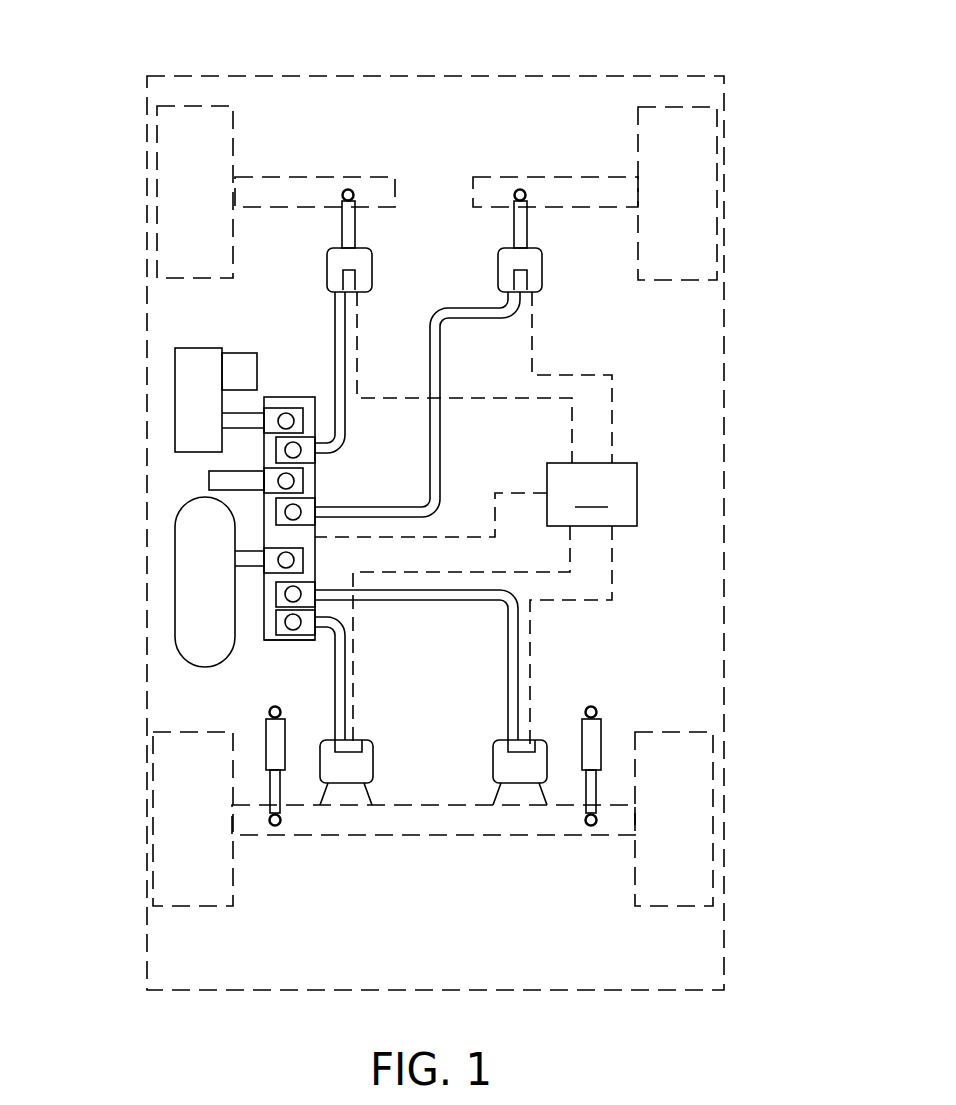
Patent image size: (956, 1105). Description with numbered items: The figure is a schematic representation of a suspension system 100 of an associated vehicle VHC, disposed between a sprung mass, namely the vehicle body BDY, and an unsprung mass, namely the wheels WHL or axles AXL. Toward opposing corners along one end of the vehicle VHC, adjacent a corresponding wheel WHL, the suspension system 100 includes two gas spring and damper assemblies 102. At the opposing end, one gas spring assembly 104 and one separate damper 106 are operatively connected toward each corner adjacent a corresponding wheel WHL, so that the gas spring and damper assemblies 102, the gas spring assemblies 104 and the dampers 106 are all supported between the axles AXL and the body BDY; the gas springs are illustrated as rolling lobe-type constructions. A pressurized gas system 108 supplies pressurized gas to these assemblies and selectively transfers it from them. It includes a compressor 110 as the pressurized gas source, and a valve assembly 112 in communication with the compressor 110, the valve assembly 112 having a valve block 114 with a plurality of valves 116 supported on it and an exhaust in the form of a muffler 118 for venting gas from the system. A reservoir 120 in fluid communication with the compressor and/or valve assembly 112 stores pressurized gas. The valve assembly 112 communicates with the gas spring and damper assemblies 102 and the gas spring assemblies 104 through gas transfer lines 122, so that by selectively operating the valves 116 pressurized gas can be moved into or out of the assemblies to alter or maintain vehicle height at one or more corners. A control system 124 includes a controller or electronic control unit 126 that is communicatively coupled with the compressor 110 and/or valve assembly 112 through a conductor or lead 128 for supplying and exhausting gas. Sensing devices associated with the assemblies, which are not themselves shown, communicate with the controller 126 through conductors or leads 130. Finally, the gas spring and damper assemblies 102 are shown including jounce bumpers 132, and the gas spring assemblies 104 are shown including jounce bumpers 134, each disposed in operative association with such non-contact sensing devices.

The suspension system 100 is at (705, 340).
The gas spring and damper assemblies 102 is at (378, 282).
The gas spring assemblies 104 is at (388, 760).
The dampers 106 is at (266, 723).
The pressurized gas system 108 is at (167, 469).
The compressor 110 is at (183, 366).
The valve assembly 112 is at (293, 393).
The valve block 114 is at (267, 640).
The valves 116 is at (294, 481).
The muffler 118 is at (209, 480).
The reservoir 120 is at (176, 582).
The gas transfer lines 122 is at (347, 335).
The control system 124 is at (682, 425).
The controller or electronic control unit (ECU) 126 is at (592, 494).
The conductor or lead 128 is at (450, 537).
The conductors or leads 130 is at (553, 375).
The jounce bumpers 132 is at (327, 280).
The jounce bumpers 134 is at (378, 740).
The vehicle body BDY is at (476, 76).
The vehicle VHC is at (680, 64).
The wheel WHL is at (177, 138).
The axle AXL is at (268, 182).